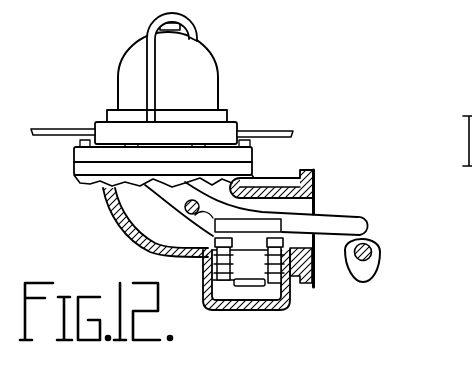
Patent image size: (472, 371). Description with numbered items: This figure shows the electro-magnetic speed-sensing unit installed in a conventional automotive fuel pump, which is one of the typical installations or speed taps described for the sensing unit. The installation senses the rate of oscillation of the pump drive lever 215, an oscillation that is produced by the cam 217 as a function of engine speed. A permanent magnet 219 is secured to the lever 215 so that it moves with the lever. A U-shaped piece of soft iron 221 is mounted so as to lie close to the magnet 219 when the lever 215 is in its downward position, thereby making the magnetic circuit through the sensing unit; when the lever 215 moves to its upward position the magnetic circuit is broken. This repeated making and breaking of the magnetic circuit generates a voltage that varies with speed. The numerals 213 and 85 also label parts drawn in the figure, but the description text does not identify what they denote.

The cover assembly 213 is at (241, 103).
The pump drive lever 215 is at (321, 227).
The cam 217 is at (367, 268).
The permanent magnet 219 is at (200, 214).
The U-shaped piece of soft iron 221 is at (227, 287).
The terminal screws 85 is at (195, 256).